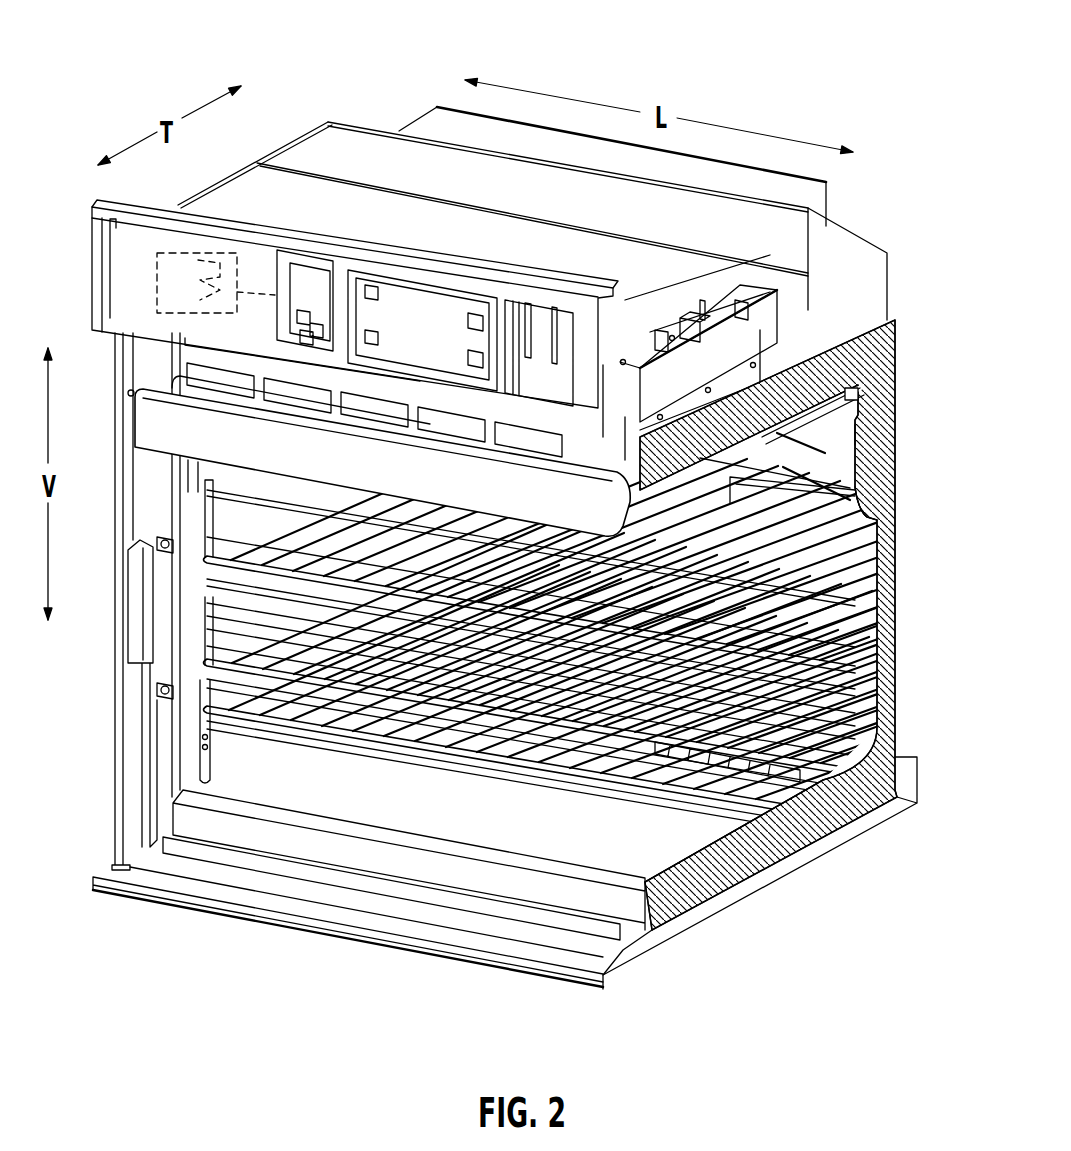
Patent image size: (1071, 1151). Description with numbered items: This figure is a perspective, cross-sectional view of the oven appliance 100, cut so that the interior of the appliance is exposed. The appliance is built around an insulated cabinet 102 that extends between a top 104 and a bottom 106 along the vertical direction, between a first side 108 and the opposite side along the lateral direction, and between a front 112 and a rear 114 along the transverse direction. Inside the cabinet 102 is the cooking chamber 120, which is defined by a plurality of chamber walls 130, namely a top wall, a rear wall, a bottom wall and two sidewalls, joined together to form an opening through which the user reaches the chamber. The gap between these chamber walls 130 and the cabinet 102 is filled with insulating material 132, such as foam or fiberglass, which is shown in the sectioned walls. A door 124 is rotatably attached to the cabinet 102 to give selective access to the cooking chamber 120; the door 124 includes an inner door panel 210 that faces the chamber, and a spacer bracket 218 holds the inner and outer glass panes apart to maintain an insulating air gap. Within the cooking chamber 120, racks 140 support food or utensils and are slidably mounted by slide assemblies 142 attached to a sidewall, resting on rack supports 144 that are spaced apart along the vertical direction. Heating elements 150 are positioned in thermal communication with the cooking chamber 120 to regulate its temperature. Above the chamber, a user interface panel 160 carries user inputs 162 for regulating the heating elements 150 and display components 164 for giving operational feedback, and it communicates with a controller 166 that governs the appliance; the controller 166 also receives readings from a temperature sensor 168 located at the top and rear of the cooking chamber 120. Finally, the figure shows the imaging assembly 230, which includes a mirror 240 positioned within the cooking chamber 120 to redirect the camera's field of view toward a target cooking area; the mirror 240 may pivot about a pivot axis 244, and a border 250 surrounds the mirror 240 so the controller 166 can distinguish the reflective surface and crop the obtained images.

The oven appliance 100 is at (367, 62).
The cabinet 102 is at (895, 482).
The top 104 is at (82, 210).
The bottom 106 is at (88, 882).
The first side 108 is at (112, 787).
The front 112 is at (228, 222).
The rear 114 is at (450, 108).
The cooking chamber 120 is at (720, 805).
The door 124 is at (152, 465).
The chamber walls 130 is at (800, 448).
The insulating material 132 is at (708, 883).
The racks 140 is at (813, 683).
The slide assemblies 142 is at (210, 713).
The rack supports 144 is at (220, 500).
The heating elements 150 is at (862, 450).
The user interface panel 160 is at (452, 283).
The user inputs 162 is at (372, 283).
The display components 164 is at (437, 320).
The controller 166 is at (231, 266).
The temperature sensor 168 is at (865, 440).
The inner door panel 210 is at (170, 602).
The spacer bracket 218 is at (323, 467).
The imaging assembly 230 is at (880, 461).
The mirror 240 is at (880, 531).
The pivot axis 244 is at (800, 440).
The border 250 is at (773, 430).